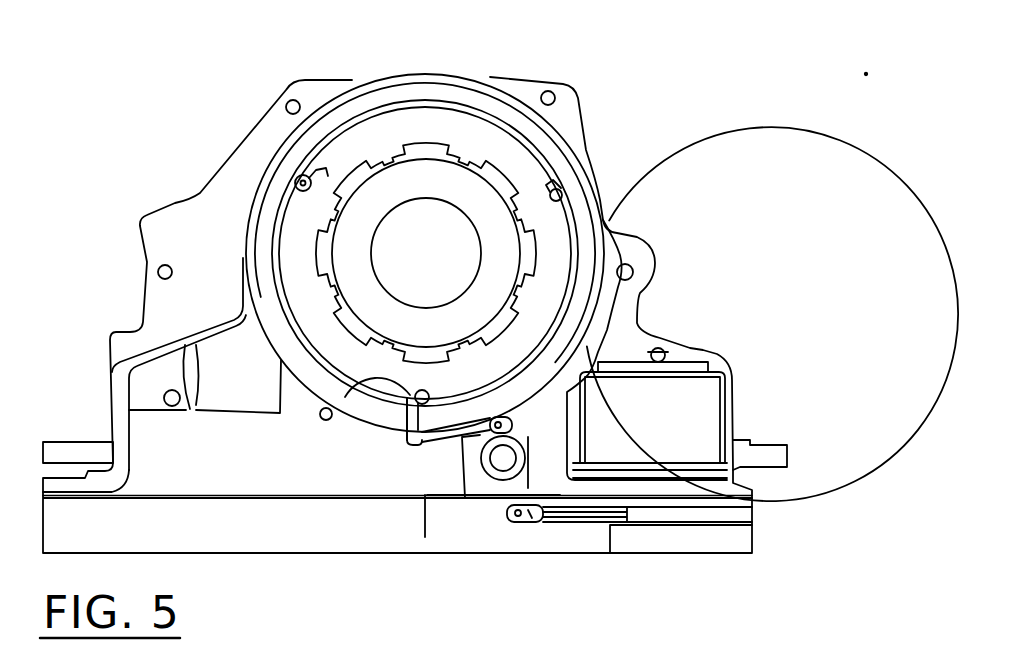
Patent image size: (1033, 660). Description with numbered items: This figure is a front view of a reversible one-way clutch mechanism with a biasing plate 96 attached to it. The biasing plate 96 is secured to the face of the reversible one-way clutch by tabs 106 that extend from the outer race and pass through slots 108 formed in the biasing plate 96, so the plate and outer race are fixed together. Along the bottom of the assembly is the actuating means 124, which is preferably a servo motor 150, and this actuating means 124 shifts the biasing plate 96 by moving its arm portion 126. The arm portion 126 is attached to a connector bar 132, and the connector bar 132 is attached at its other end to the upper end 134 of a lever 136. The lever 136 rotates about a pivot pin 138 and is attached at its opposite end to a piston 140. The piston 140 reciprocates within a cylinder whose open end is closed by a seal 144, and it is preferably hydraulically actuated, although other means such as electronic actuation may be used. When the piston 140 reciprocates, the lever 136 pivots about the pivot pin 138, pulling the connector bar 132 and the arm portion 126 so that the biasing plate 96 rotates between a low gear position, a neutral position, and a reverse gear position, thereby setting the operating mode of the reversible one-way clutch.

The biasing plate 96 is at (560, 228).
The tabs 106 is at (296, 178).
The slots 108 is at (317, 170).
The actuating means 124 is at (704, 335).
The arm portion 126 is at (418, 403).
The connector bar 132 is at (440, 440).
The upper end 134 is at (512, 422).
The lever 136 is at (503, 497).
The pivot pin 138 is at (500, 460).
The piston 140 is at (608, 527).
The seal 144 is at (552, 520).
The servo motor 150 is at (707, 395).